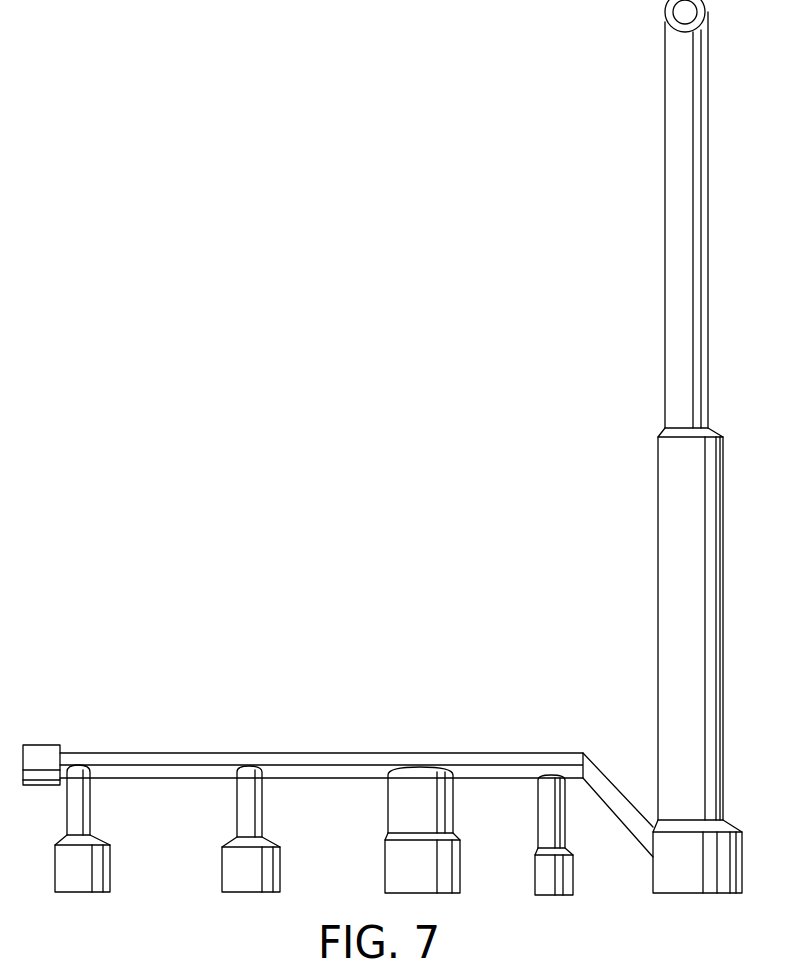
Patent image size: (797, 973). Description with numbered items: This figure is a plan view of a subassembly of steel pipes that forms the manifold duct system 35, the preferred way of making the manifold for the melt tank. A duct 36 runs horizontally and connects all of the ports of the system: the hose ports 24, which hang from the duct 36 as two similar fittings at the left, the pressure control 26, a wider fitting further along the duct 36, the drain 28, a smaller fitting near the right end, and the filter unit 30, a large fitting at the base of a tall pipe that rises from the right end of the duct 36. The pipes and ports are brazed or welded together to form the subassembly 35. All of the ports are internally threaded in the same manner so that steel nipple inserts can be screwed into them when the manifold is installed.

The hose ports 24 is at (247, 893).
The pressure control 26 is at (433, 893).
The drain 28 is at (548, 895).
The filter unit 30 is at (682, 893).
The manifold duct system 35 is at (645, 618).
The duct 36 is at (358, 752).